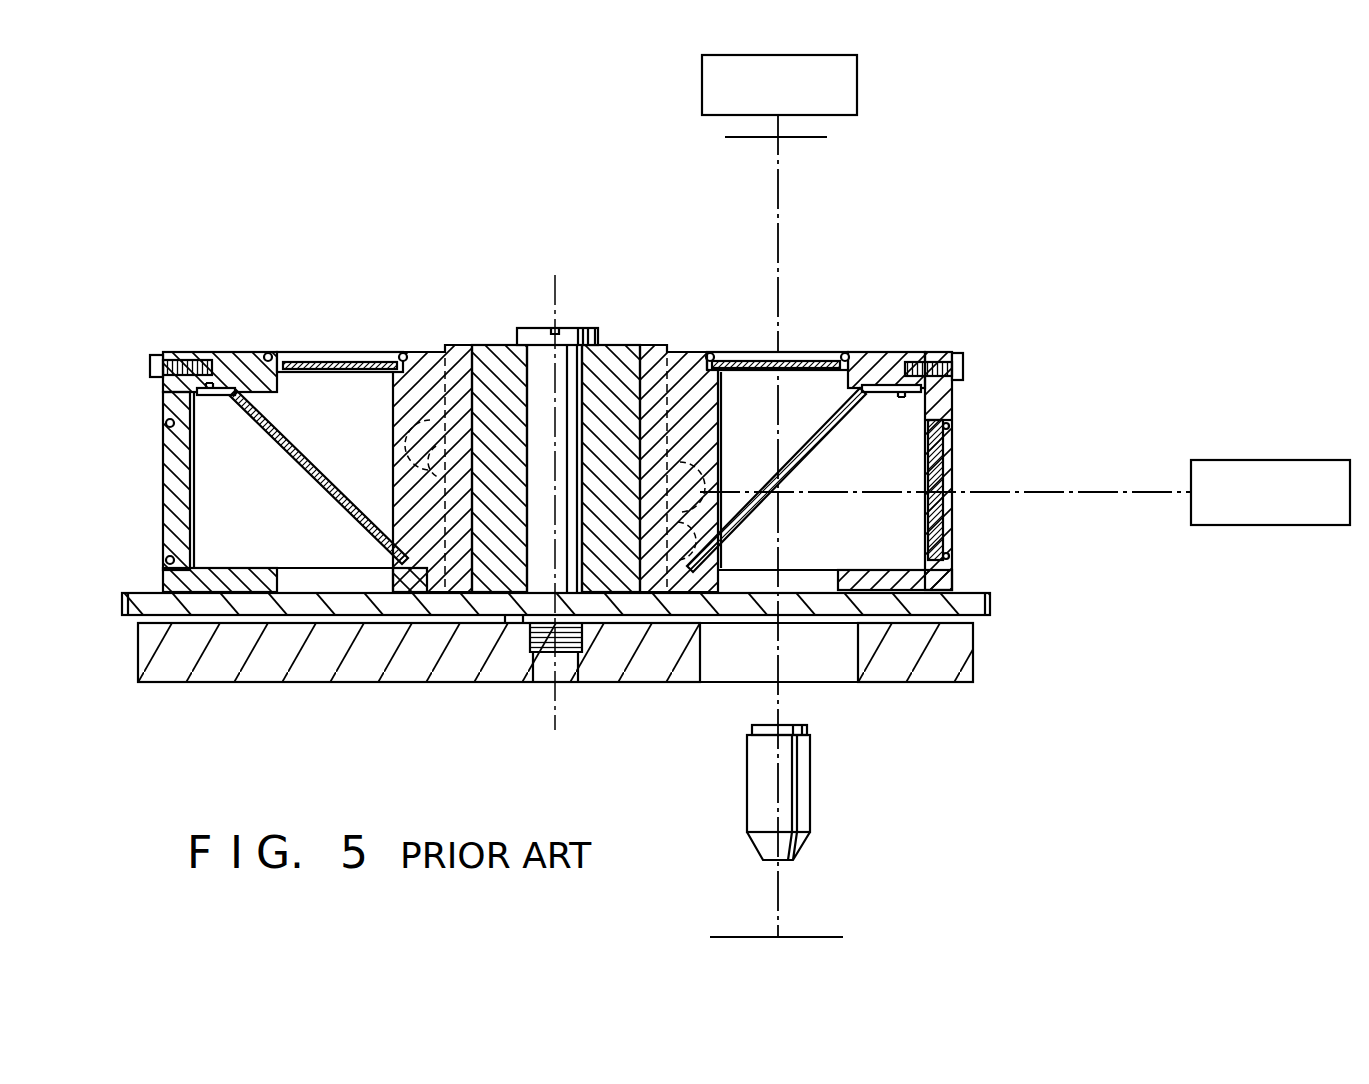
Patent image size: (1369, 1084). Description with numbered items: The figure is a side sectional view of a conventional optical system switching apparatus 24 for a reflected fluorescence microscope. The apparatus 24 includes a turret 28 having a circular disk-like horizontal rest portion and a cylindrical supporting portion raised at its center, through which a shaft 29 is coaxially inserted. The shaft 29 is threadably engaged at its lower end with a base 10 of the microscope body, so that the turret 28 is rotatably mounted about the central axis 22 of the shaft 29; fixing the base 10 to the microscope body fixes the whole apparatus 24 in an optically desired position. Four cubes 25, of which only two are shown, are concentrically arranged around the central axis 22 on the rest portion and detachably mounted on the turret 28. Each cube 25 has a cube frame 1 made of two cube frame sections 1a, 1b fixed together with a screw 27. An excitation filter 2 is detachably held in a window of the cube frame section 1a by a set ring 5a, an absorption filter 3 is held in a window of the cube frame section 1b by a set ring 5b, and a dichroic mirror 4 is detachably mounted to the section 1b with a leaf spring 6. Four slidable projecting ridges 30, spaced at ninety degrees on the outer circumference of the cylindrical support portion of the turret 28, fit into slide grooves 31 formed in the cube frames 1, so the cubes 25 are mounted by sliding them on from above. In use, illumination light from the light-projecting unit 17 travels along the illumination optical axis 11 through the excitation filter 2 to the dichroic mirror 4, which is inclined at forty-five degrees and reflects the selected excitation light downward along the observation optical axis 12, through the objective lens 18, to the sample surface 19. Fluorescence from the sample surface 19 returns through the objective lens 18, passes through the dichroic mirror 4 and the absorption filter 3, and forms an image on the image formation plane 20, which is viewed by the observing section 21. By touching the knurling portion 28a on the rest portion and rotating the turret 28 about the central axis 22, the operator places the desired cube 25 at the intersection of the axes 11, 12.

The cube frame 1 is at (857, 415).
The cube frame section 1a is at (937, 352).
The cube frame section 1b is at (880, 352).
The excitation filter 2 is at (950, 463).
The absorption filter 3 is at (805, 352).
The dichroic mirror 4 is at (777, 483).
The set ring 5a is at (950, 425).
The set ring 5b is at (704, 350).
The leaf spring 6 is at (862, 404).
The base 10 is at (970, 665).
The illumination optical axis 11 is at (1133, 491).
The observation optical axis 12 is at (782, 700).
The light-projecting unit 17 is at (1248, 460).
The objective lens 18 is at (745, 812).
The sample surface 19 is at (815, 935).
The image formation plane 20 is at (808, 137).
The observing section 21 is at (857, 90).
The central axis 22 is at (560, 705).
The optical system switching apparatus 24 is at (208, 328).
The cube 25 is at (430, 336).
The screw 27 is at (965, 360).
The turret 28 is at (618, 348).
The knurling portion 28a is at (995, 598).
The shaft 29 is at (540, 343).
The slidable projecting ridge 30 is at (445, 432).
The slide groove 31 is at (442, 472).